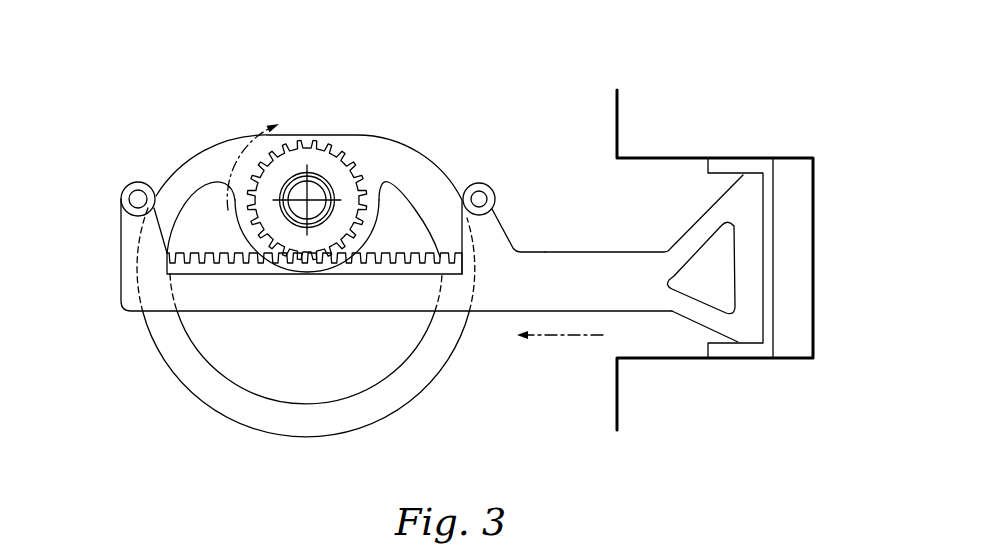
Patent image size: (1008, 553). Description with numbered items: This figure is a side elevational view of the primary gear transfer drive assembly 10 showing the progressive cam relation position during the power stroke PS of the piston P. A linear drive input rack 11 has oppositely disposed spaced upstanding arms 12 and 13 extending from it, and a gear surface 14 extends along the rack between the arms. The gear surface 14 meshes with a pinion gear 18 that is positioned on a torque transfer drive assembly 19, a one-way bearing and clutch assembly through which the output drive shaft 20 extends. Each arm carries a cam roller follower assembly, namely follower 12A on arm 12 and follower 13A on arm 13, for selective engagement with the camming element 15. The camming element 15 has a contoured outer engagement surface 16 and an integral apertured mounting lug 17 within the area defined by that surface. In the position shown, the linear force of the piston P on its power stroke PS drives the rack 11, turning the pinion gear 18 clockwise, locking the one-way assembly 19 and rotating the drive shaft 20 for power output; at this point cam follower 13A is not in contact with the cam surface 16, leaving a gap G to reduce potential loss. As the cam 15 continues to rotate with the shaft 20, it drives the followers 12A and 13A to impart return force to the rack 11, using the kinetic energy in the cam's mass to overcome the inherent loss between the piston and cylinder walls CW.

The primary gear transfer drive assembly 10 is at (556, 66).
The linear drive input rack 11 is at (505, 290).
The upstanding arm 12 is at (121, 282).
The cam roller follower assembly 12A is at (130, 186).
The upstanding arm 13 is at (493, 245).
The cam roller follower assembly 13A is at (495, 188).
The gear surface 14 is at (360, 275).
The camming element 15 is at (207, 170).
The contoured outer engagement surface 16 is at (214, 418).
The apertured mounting lug 17 is at (362, 226).
The pinion gear 18 is at (306, 138).
The torque transfer drive assembly 19 is at (295, 164).
The output drive shaft 20 is at (325, 192).
The gap G is at (459, 165).
The piston P is at (757, 242).
The cylinder walls CW is at (670, 359).
The power stroke PS is at (555, 340).